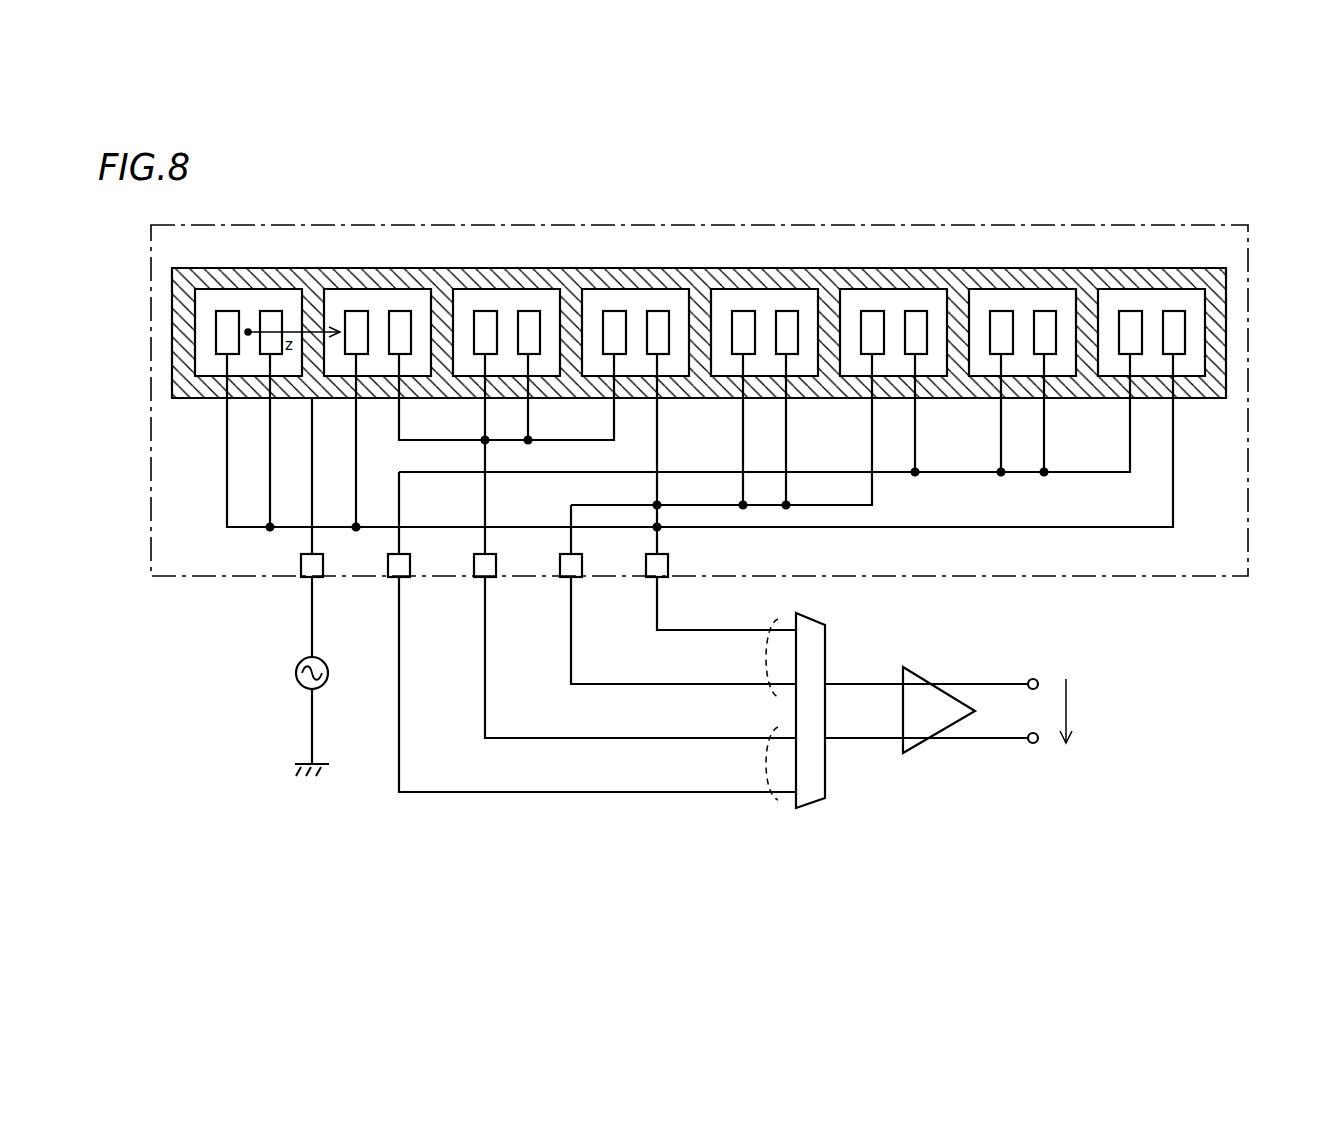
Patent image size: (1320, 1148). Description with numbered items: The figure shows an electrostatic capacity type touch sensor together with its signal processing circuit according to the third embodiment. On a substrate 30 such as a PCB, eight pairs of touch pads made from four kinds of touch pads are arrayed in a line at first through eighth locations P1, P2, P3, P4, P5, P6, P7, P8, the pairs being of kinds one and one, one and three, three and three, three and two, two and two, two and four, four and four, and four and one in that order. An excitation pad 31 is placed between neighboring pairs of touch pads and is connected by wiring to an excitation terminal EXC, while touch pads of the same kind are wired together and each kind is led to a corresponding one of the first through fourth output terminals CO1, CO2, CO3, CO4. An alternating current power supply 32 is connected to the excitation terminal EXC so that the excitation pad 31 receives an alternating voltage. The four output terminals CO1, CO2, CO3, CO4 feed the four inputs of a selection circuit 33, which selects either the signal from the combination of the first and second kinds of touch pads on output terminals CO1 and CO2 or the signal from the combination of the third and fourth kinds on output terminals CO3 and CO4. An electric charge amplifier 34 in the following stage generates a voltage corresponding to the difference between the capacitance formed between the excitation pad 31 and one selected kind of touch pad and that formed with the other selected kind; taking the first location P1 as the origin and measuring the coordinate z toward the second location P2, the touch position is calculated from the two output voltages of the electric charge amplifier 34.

The substrate 30 is at (1232, 527).
The excitation pad 31 is at (1217, 385).
The alternating current power supply 32 is at (296, 673).
The selection circuit 33 is at (822, 800).
The electric charge amplifier 34 is at (919, 748).
The first location P1 is at (248, 318).
The second location P2 is at (377, 318).
The third location P3 is at (506, 318).
The fourth location P4 is at (635, 318).
The fifth location P5 is at (764, 318).
The sixth location P6 is at (893, 318).
The seventh location P7 is at (1022, 318).
The eighth location P8 is at (1151, 318).
The excitation terminal EXC is at (315, 553).
The first output terminal CO1 is at (659, 553).
The second output terminal CO2 is at (573, 553).
The third output terminal CO3 is at (487, 553).
The fourth output terminal CO4 is at (401, 553).